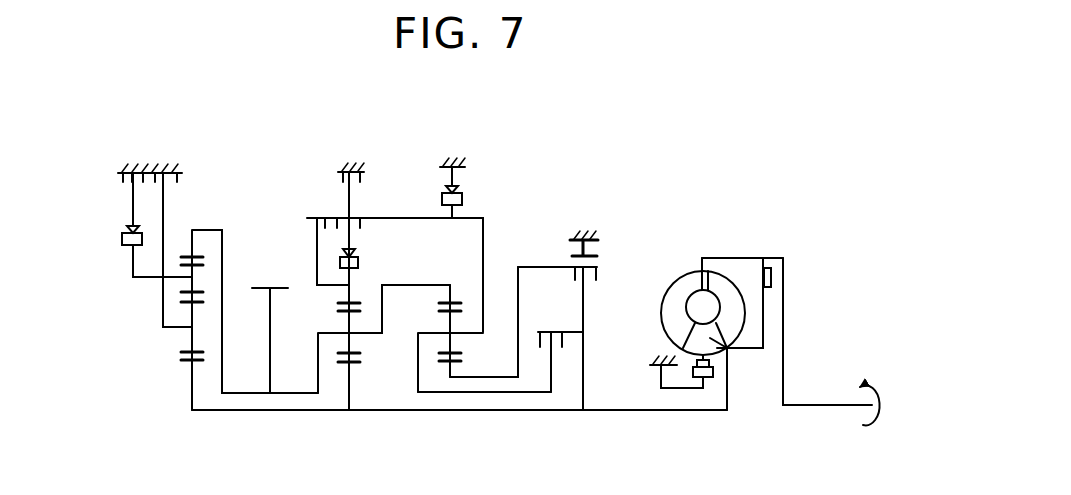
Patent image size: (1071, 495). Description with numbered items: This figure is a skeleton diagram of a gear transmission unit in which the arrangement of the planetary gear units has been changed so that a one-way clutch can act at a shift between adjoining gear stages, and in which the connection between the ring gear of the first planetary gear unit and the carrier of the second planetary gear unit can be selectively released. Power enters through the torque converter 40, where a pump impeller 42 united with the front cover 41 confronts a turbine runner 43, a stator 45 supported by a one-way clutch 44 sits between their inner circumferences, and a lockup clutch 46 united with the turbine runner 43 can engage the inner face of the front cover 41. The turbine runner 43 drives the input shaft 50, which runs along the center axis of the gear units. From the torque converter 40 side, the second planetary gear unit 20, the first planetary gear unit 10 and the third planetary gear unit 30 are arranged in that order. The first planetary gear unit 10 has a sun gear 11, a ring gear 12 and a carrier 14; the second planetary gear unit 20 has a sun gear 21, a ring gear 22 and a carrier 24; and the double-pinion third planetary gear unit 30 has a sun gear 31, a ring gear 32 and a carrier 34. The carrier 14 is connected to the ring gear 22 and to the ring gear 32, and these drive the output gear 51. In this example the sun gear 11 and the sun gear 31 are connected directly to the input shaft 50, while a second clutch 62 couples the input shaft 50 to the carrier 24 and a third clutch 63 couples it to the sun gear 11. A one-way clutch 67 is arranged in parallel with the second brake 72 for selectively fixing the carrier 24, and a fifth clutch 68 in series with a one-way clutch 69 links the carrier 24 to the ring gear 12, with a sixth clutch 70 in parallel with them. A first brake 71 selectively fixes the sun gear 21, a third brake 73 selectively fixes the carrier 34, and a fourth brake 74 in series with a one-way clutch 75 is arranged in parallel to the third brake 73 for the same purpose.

The first planetary gear unit 10 is at (333, 396).
The sun gear 11 is at (352, 364).
The ring gear 12 is at (340, 297).
The carrier 14 is at (356, 338).
The second planetary gear unit 20 is at (473, 394).
The sun gear 21 is at (443, 363).
The ring gear 22 is at (453, 301).
The carrier 24 is at (460, 338).
The third planetary gear unit 30 is at (184, 394).
The sun gear 31 is at (190, 360).
The ring gear 32 is at (200, 256).
The carrier 34 is at (163, 283).
The torque converter 40 is at (735, 250).
The front cover 41 is at (784, 354).
The pump impeller 42 is at (672, 306).
The turbine runner 43 is at (738, 307).
The one-way clutch 44 is at (712, 380).
The stator 45 is at (727, 352).
The lockup clutch 46 is at (772, 276).
The input shaft 50 is at (573, 410).
The output gear 51 is at (268, 326).
The second clutch 62 is at (556, 346).
The third clutch 63 is at (597, 268).
The one-way clutch 67 is at (462, 198).
The fifth clutch 68 is at (355, 222).
The one-way clutch 69 is at (359, 265).
The sixth clutch 70 is at (307, 226).
The first brake 71 is at (581, 228).
The second brake 72 is at (338, 176).
The third brake 73 is at (182, 174).
The fourth brake 74 is at (123, 181).
The one-way clutch 75 is at (122, 250).